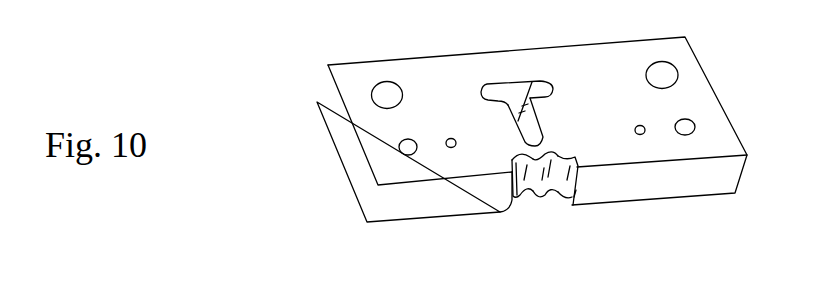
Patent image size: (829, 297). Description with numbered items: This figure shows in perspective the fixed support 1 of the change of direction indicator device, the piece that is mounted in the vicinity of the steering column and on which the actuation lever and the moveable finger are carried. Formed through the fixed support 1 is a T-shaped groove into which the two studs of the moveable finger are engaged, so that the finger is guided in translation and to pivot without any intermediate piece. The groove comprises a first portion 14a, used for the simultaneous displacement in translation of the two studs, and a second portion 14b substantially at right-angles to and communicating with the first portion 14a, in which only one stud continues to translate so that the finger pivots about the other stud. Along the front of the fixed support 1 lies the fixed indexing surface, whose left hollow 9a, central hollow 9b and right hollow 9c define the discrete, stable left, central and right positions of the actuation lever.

The fixed support 1 is at (715, 97).
The first portion of the groove 14a is at (537, 122).
The second portion of the groove 14b is at (553, 89).
The left hollow 9a is at (553, 197).
The central hollow 9b is at (532, 190).
The right hollow 9c is at (512, 195).